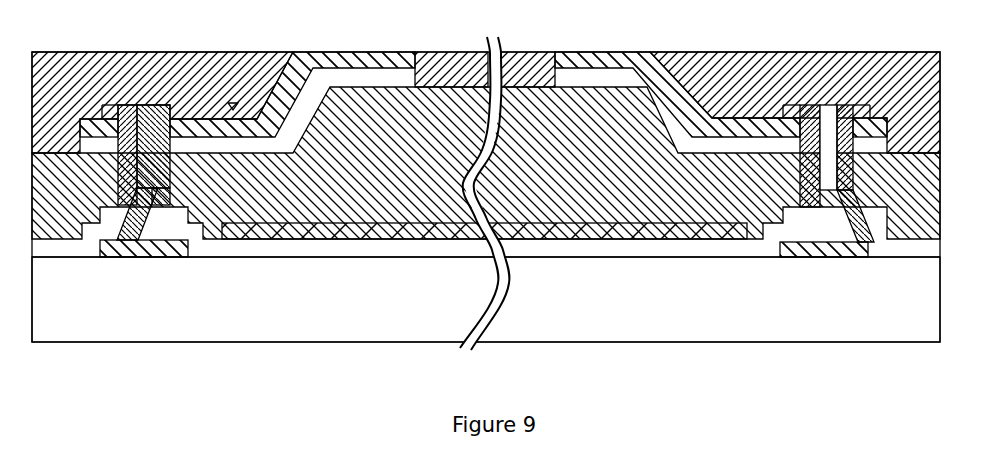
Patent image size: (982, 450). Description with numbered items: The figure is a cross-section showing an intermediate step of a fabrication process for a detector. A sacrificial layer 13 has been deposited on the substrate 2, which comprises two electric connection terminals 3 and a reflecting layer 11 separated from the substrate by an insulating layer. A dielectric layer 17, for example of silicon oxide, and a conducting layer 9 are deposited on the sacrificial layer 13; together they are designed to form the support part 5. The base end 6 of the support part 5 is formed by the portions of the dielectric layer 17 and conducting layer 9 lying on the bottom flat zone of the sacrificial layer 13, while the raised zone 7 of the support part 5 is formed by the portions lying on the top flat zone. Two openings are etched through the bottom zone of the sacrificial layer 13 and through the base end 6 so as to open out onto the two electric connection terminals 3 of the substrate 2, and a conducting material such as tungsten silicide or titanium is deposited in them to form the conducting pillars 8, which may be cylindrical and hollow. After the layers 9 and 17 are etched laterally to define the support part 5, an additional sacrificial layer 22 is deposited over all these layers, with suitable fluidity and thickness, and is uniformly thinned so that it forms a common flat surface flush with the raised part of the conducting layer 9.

The substrate 2 is at (397, 302).
The electric connection terminals 3 is at (132, 240).
The support part 5 is at (548, 44).
The base end 6 is at (233, 103).
The raised zone 7 is at (402, 28).
The conducting pillars 8 is at (160, 108).
The conducting layer 9 is at (618, 55).
The reflecting layer 11 is at (632, 240).
The sacrificial layer 13 is at (343, 195).
The dielectric layer 17 is at (337, 77).
The additional sacrificial layer 22 is at (113, 88).